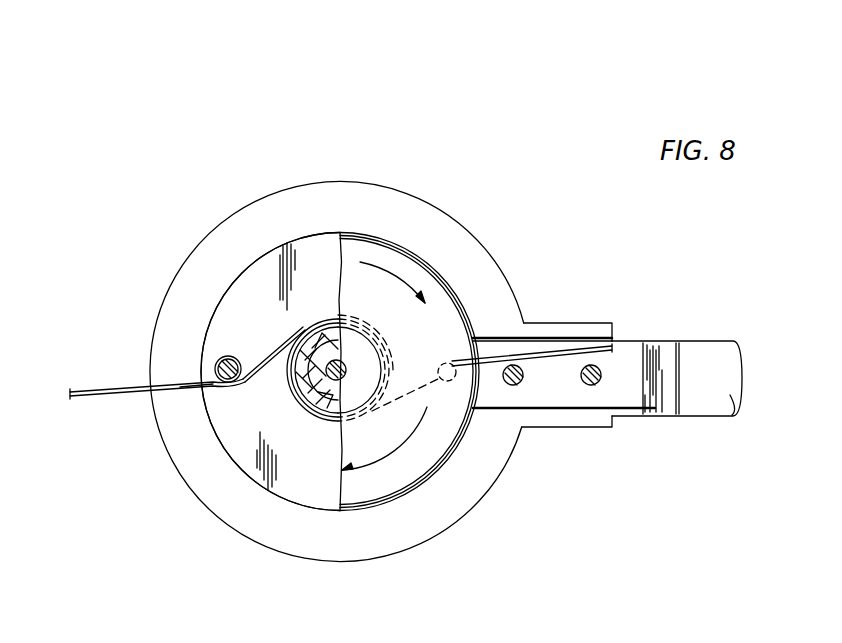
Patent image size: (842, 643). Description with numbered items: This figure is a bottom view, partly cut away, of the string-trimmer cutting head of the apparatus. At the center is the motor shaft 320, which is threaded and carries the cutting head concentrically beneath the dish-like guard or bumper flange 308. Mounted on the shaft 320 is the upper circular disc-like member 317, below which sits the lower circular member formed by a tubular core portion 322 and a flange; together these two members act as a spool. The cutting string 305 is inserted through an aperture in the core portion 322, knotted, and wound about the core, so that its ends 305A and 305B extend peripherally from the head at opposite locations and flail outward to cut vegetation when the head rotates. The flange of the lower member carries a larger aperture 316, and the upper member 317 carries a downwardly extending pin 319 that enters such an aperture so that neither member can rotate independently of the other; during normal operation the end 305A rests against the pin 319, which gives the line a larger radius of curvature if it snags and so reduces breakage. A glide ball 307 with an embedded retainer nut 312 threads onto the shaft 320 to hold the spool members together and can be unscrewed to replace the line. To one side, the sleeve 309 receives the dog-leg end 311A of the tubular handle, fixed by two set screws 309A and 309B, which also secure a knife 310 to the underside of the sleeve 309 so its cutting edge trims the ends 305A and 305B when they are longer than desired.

The cutting string 305 is at (322, 323).
The end of cutting string 305A is at (82, 400).
The end of cutting string 305B is at (527, 346).
The glide ball 307 is at (312, 394).
The bumper flange 308 is at (432, 208).
The sleeve 309 is at (598, 323).
The set screw 309A is at (516, 386).
The set screw 309B is at (593, 386).
The knife 310 is at (660, 350).
The dog-leg end of tubular handle 311A is at (711, 418).
The retainer nut 312 is at (297, 338).
The aperture 316 is at (220, 362).
The upper circular disc-like member 317 is at (231, 452).
The pin 319 is at (215, 376).
The shaft 320 is at (338, 370).
The tubular core portion 322 is at (323, 412).